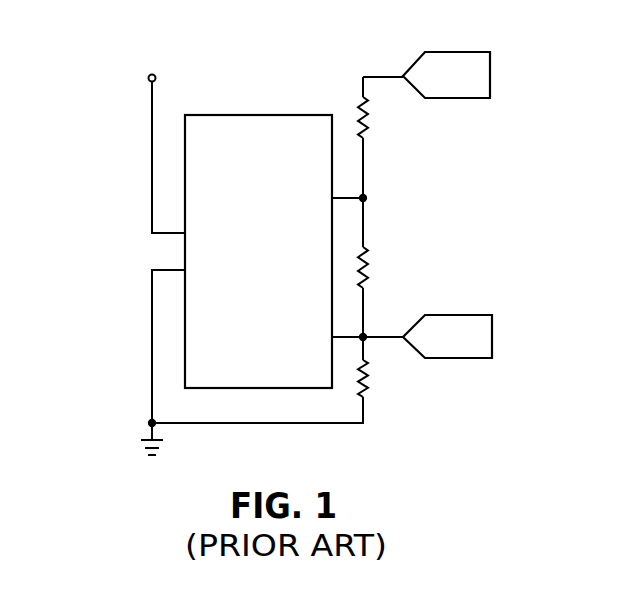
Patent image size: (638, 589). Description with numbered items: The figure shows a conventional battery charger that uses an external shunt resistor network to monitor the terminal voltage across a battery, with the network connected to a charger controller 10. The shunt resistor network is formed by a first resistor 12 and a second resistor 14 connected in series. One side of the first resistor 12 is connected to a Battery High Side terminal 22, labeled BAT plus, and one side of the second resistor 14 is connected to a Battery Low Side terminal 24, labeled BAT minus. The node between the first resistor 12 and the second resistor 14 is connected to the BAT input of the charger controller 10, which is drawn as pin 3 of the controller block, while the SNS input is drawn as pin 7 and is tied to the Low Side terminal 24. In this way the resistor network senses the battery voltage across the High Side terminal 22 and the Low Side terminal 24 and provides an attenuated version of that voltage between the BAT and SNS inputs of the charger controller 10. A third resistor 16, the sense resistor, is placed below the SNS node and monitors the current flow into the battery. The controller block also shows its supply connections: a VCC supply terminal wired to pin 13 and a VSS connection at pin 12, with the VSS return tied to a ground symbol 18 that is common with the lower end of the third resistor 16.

The charger controller 10 is at (262, 159).
The BAT pin 3 is at (349, 182).
The SNS pin 7 is at (367, 326).
The first resistor 12 is at (370, 130).
The VCC pin 13 is at (180, 150).
The second resistor 14 is at (370, 278).
The third resistor 16 is at (370, 392).
The ground (VSS) 18 is at (142, 440).
The Battery High Side terminal 22 is at (467, 52).
The Battery Low Side terminal 24 is at (467, 315).